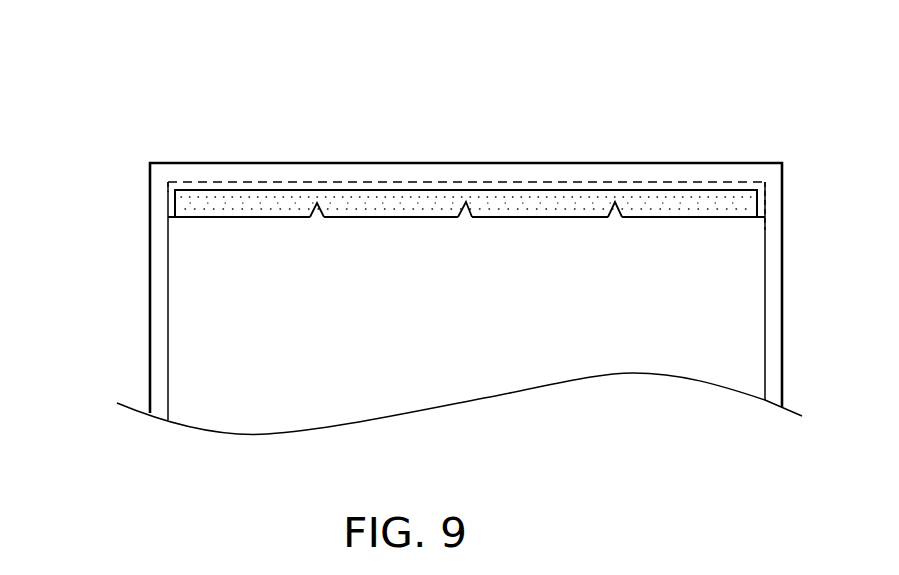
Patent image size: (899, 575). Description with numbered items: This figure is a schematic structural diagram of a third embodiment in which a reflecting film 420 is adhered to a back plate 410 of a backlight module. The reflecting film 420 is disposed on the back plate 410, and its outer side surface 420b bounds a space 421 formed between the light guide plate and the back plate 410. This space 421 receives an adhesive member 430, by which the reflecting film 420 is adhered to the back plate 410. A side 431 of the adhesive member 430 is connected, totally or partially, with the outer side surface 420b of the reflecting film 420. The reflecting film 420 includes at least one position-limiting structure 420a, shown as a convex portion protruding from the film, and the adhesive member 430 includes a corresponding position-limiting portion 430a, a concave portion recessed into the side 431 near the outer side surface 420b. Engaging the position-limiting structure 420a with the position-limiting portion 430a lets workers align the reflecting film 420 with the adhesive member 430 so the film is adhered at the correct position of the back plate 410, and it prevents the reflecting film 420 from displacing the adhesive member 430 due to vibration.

The back plate 410 is at (163, 172).
The reflecting film 420 is at (188, 348).
The position-limiting structure 420a is at (322, 212).
The outer side surface 420b is at (568, 216).
The space 421 is at (733, 184).
The adhesive member 430 is at (523, 202).
The position-limiting portion 430a is at (467, 215).
The side 431 is at (499, 213).